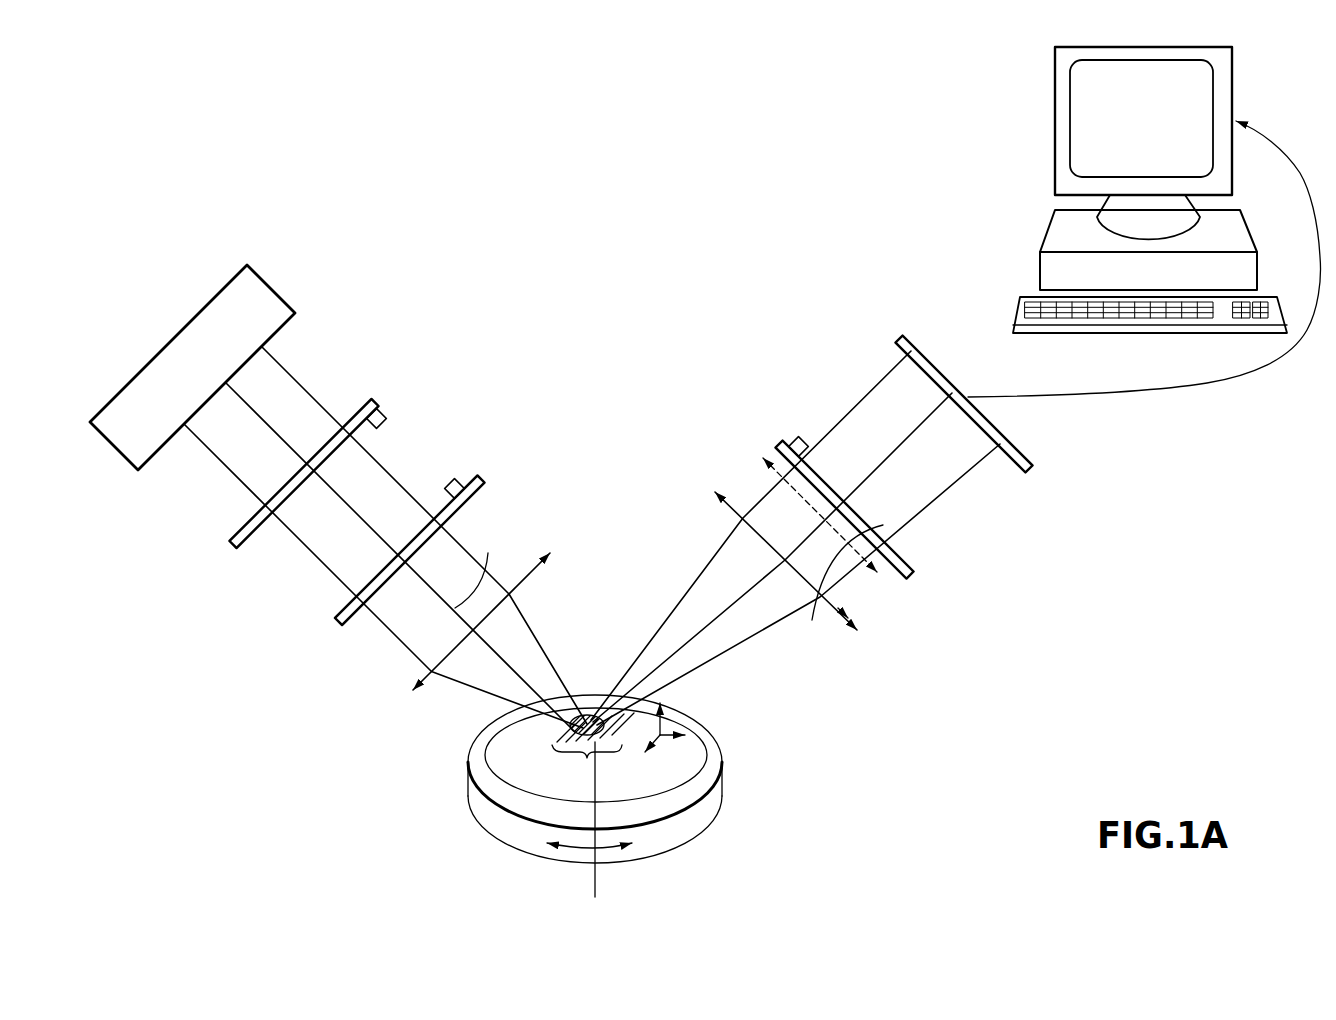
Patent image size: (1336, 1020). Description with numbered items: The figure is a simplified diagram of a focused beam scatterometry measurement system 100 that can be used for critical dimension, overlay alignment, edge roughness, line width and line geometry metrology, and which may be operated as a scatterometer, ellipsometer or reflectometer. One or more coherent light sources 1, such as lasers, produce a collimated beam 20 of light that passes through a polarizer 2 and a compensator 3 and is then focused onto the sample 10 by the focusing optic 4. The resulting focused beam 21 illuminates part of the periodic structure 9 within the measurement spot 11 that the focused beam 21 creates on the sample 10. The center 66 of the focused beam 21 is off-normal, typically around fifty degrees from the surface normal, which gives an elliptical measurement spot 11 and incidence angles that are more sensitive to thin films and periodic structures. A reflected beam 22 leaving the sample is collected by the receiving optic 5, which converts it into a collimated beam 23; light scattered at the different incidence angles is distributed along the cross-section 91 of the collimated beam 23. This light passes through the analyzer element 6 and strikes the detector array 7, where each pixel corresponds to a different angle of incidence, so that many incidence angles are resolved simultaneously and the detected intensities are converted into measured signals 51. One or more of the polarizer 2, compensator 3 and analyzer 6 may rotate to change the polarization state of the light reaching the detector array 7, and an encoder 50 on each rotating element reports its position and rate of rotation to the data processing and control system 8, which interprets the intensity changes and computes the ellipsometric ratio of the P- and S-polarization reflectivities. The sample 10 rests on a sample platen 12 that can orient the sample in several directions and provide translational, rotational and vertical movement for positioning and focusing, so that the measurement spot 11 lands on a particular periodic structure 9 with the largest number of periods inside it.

The focused beam scatterometry measurement system 100 is at (398, 180).
The coherent light source 1 is at (263, 300).
The polarizer 2 is at (372, 403).
The compensator 3 is at (481, 480).
The focusing optic 4 is at (526, 575).
The receiving optic 5 is at (818, 594).
The analyzer element 6 is at (778, 447).
The detector array 7 is at (900, 339).
The data processing and control system 8 is at (1043, 237).
The periodic structure 9 is at (590, 758).
The sample 10 is at (507, 771).
The measurement spot 11 is at (592, 716).
The sample platen 12 is at (692, 815).
The collimated beam 20 is at (238, 444).
The focused beam 21 is at (477, 665).
The reflected beam 22 is at (740, 632).
The collimated beam 23 is at (830, 578).
The encoder 50 is at (440, 479).
The measured signals 51 is at (1057, 397).
The center of the focused light beam 66 is at (477, 566).
The cross-section of the collimated beam 91 is at (883, 525).